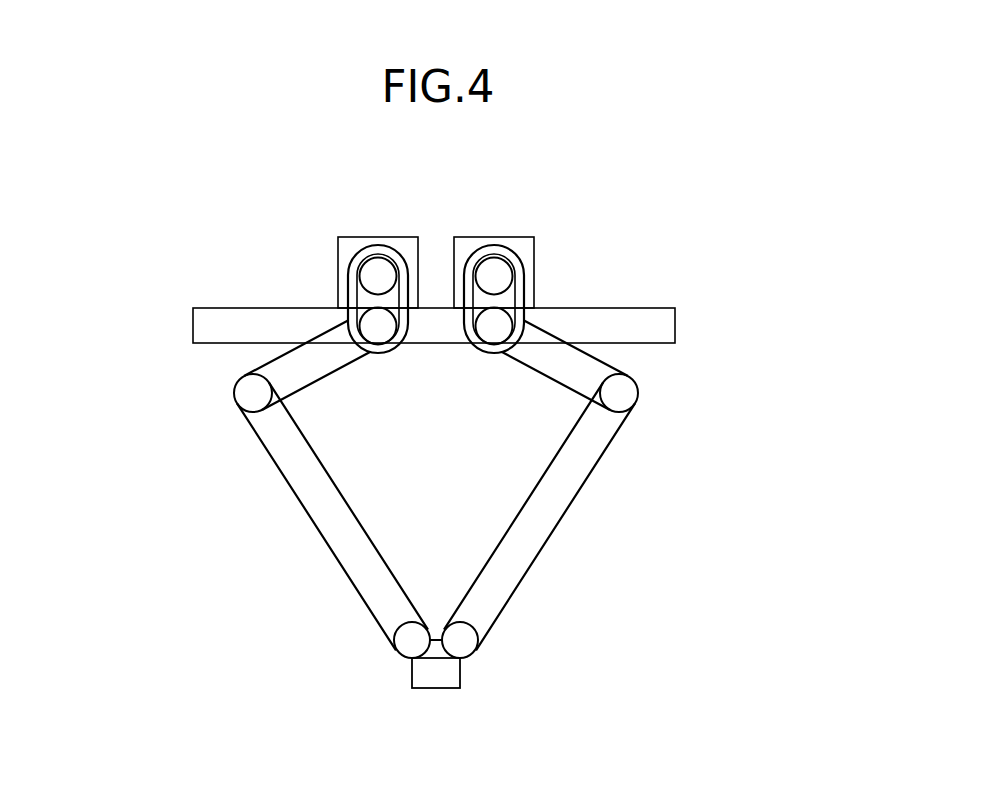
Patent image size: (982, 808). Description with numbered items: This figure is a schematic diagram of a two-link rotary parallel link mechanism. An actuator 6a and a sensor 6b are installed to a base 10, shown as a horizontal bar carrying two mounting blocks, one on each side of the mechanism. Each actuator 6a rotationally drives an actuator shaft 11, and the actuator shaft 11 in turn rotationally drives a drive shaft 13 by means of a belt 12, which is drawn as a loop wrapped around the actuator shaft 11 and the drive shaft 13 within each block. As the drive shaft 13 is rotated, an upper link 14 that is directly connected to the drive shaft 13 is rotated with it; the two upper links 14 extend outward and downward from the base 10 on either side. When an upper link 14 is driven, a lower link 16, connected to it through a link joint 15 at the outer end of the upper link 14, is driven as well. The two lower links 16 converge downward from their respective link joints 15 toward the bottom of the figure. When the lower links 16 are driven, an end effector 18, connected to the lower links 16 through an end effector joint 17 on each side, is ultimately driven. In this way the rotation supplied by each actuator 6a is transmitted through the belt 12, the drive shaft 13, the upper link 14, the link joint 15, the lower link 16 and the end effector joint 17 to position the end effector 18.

The actuator 6a is at (436, 232).
The sensor 6b is at (376, 237).
The base 10 is at (647, 308).
The actuator shaft 11 is at (377, 276).
The belt 12 is at (403, 357).
The drive shaft 13 is at (377, 326).
The upper link 14 is at (270, 363).
The link joint 15 is at (234, 396).
The lower link 16 is at (303, 505).
The end effector joint 17 is at (392, 650).
The end effector 18 is at (440, 690).